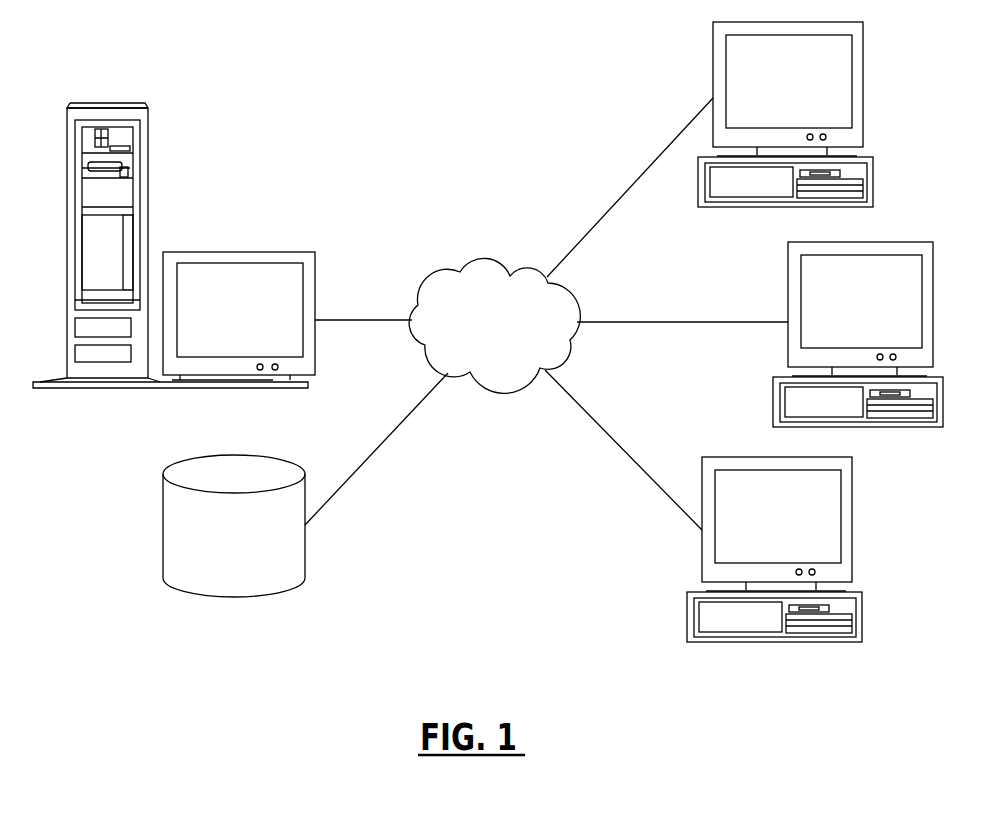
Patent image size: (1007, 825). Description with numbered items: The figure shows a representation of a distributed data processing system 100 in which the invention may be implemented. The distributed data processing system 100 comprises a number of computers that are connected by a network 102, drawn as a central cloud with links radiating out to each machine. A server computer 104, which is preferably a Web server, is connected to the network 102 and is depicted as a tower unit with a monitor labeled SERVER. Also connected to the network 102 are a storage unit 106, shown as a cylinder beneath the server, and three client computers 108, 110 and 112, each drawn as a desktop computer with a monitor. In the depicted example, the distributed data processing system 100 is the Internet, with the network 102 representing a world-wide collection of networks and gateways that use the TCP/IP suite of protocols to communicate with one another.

The distributed data processing system 100 is at (385, 105).
The network 102 is at (508, 352).
The server computer 104 is at (260, 321).
The storage unit 106 is at (248, 553).
The client computer 108 is at (807, 95).
The client computer 110 is at (877, 319).
The client computer 112 is at (792, 531).